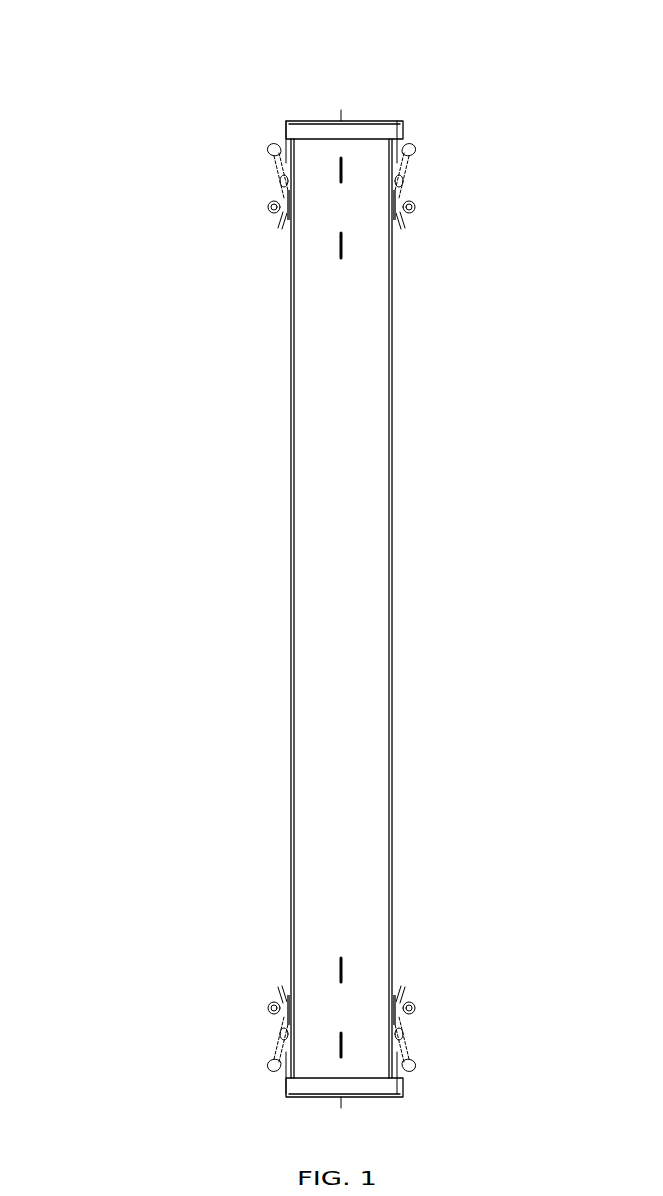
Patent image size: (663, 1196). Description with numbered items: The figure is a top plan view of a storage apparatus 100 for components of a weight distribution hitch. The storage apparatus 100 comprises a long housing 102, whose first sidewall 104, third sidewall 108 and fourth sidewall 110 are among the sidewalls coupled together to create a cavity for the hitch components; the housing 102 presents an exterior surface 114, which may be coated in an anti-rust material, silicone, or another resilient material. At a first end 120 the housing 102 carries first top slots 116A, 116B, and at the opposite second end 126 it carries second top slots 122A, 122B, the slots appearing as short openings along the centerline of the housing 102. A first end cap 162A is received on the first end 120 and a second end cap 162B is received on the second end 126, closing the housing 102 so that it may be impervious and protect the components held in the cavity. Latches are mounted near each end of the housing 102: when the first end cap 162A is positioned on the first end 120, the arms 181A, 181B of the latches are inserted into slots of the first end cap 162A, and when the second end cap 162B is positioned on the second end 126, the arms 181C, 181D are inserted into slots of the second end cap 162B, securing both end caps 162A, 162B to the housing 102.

The storage apparatus 100 is at (320, 593).
The housing 102 is at (338, 608).
The first sidewall 104 is at (294, 682).
The third sidewall 108 is at (388, 624).
The fourth sidewall 110 is at (360, 534).
The exterior surface 114 is at (357, 808).
The first top slot 116A is at (338, 168).
The first top slot 116B is at (338, 245).
The first end 120 is at (360, 194).
The second top slot 122A is at (338, 1055).
The second top slot 122B is at (338, 964).
The second end 126 is at (358, 1030).
The first end cap 162A is at (363, 131).
The second end cap 162B is at (380, 1088).
The arm 181A is at (270, 150).
The arm 181B is at (410, 152).
The arm 181C is at (277, 1057).
The arm 181D is at (410, 1063).